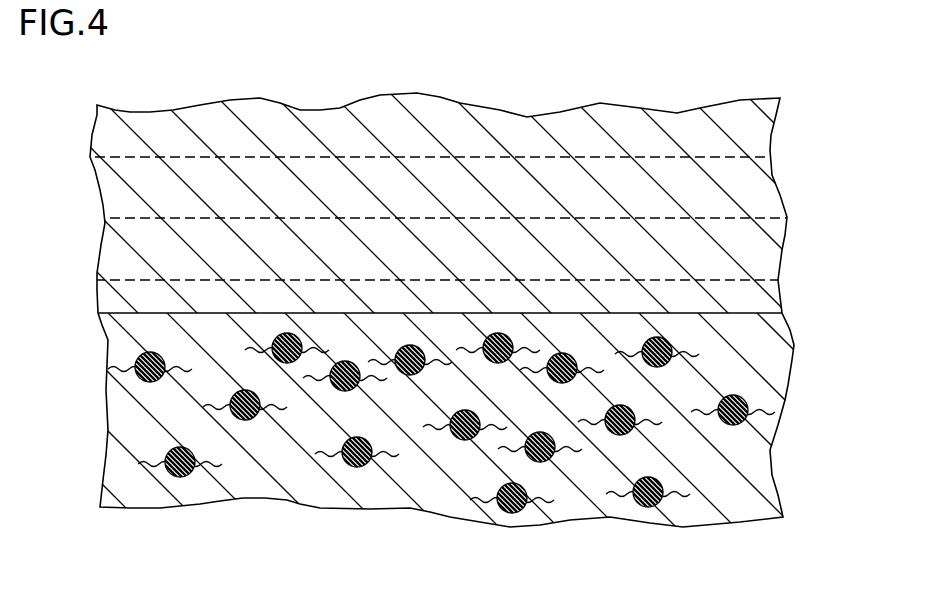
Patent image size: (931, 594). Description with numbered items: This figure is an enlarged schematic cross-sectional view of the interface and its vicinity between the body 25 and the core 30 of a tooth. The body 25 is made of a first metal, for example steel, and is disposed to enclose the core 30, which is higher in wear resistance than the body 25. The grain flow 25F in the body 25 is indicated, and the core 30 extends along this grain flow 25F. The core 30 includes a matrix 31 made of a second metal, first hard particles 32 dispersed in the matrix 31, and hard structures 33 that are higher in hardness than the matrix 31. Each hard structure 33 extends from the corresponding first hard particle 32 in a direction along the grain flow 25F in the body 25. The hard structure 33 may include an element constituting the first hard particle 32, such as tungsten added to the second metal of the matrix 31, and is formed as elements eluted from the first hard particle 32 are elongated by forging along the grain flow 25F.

The body 25 is at (619, 137).
The grain flow 25F is at (140, 157).
The core 30 is at (799, 338).
The matrix 31 is at (393, 487).
The first hard particle 32 is at (134, 363).
The hard structure 33 is at (210, 472).